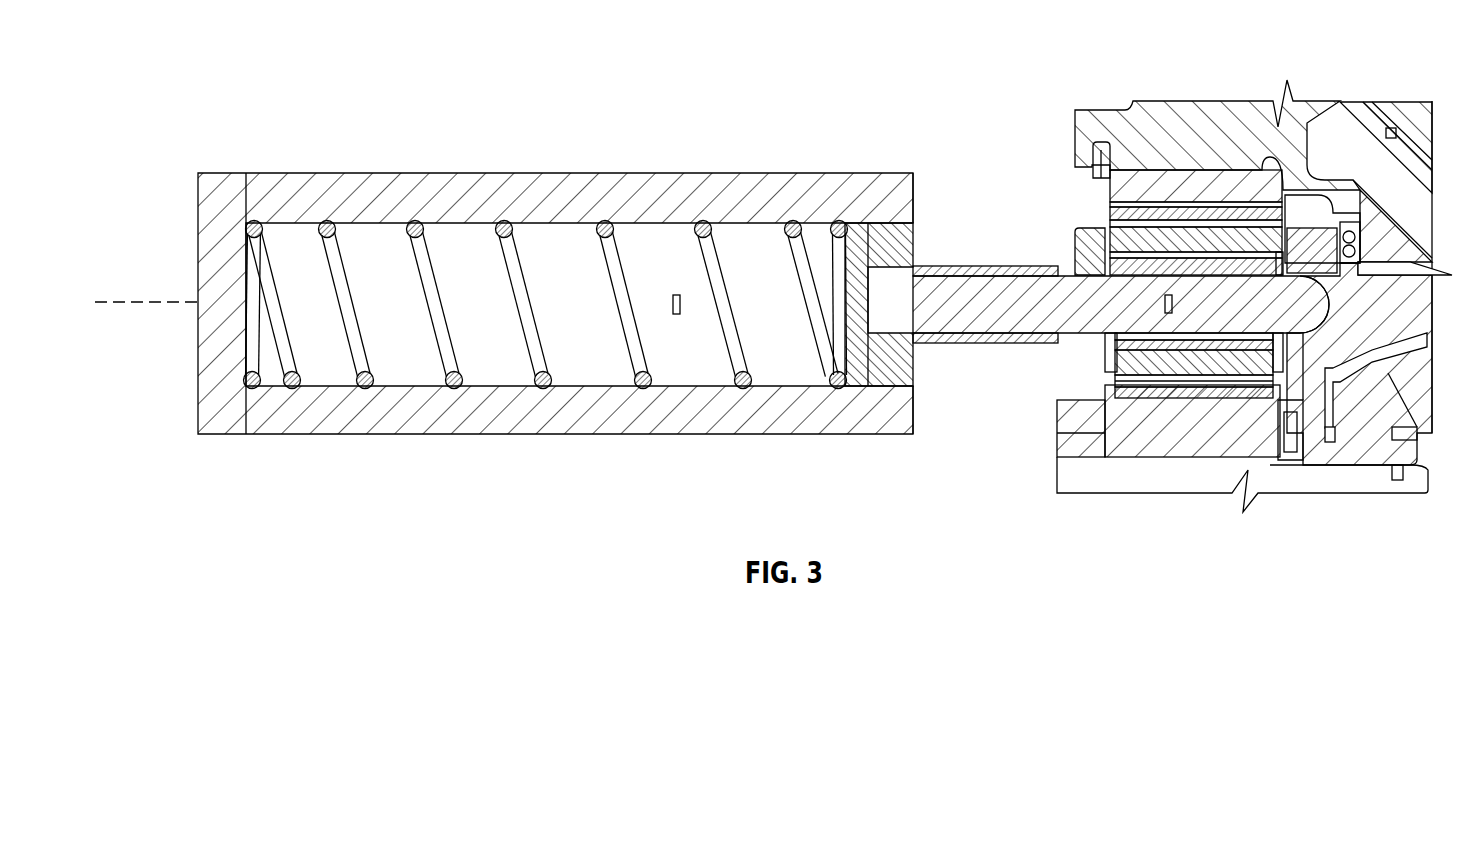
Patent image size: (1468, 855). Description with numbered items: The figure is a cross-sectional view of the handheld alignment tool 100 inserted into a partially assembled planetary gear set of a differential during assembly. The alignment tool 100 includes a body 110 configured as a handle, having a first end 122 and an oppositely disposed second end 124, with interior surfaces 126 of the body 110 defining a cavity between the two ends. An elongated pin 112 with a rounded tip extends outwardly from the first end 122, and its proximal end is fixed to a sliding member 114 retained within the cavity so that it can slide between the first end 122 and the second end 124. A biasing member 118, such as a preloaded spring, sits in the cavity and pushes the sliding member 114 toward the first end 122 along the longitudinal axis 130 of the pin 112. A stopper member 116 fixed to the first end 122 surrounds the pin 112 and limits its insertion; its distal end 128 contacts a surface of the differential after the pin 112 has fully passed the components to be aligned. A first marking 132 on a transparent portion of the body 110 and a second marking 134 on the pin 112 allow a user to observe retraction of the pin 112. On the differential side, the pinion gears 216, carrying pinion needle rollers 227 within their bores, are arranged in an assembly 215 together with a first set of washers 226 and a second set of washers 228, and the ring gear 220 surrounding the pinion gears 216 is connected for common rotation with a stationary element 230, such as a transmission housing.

The alignment tool 100 is at (254, 162).
The body 110 is at (360, 434).
The elongated pin 112 is at (1231, 313).
The sliding member 114 is at (855, 225).
The stopper member 116 is at (962, 342).
The biasing member 118 is at (434, 258).
The first end 122 is at (915, 210).
The second end 124 is at (197, 388).
The interior surfaces 126 is at (606, 372).
The distal end of stopper member 128 is at (1062, 302).
The longitudinal axis 130 is at (139, 270).
The first marking 132 is at (672, 305).
The second marking 134 is at (1165, 306).
The assembly 215 is at (1225, 398).
The pinion gears 216 is at (1117, 234).
The ring gear 220 is at (1107, 192).
The first set of washers 226 is at (1107, 352).
The pinion needle rollers 227 is at (1232, 240).
The second set of washers 228 is at (1285, 180).
The stationary element 230 is at (1236, 101).